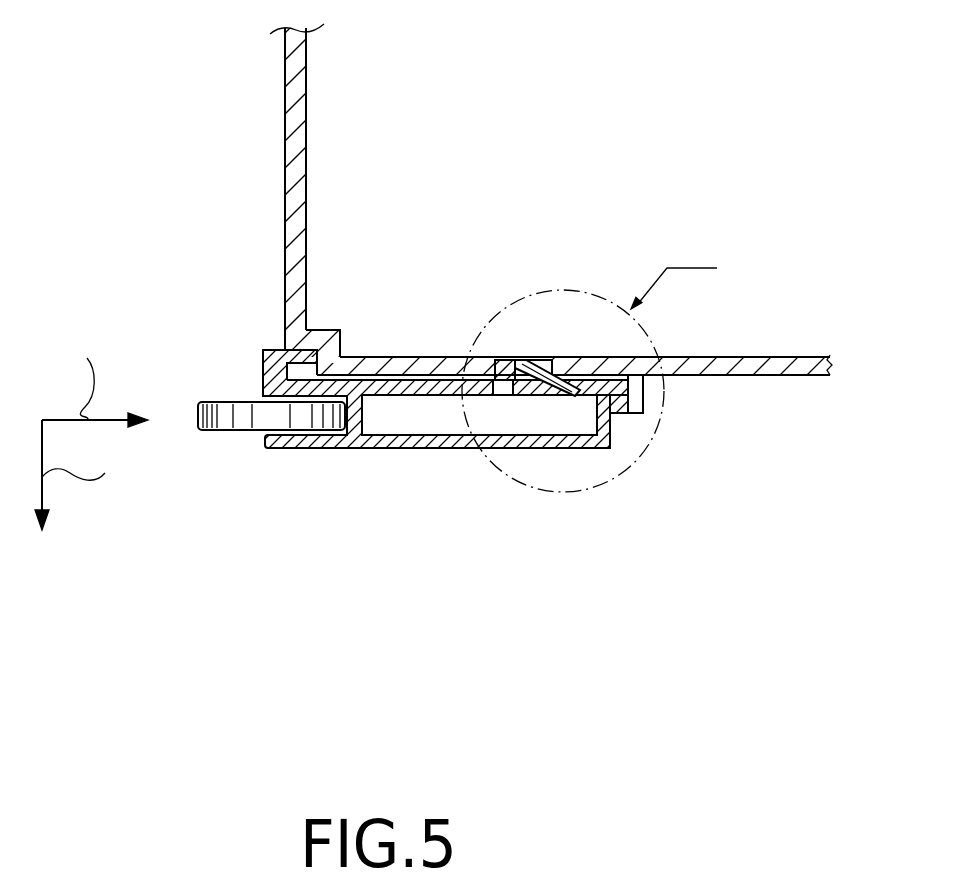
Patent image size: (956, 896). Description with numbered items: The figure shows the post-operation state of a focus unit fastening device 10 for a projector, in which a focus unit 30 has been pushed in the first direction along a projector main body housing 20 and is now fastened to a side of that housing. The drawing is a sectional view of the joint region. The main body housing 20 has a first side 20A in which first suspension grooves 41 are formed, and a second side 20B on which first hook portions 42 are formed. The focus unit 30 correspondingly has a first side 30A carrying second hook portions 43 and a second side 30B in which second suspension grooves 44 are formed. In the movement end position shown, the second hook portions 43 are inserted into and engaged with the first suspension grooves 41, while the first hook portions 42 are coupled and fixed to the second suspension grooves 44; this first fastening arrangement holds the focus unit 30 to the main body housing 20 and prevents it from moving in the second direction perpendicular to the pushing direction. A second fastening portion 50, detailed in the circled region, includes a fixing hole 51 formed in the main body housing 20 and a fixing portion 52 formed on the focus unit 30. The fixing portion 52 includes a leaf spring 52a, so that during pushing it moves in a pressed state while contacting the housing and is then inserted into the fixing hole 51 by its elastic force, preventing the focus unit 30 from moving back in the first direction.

The focus unit fastening device 10 is at (622, 116).
The projector main body housing 20 is at (305, 116).
The first side of main body housing 20A is at (327, 332).
The second side of main body housing 20B is at (648, 333).
The focus unit 30 is at (450, 448).
The first side of focus unit 30A is at (265, 387).
The second side of focus unit 30B is at (603, 449).
The first suspension groove 41 is at (343, 338).
The first hook portion 42 is at (657, 392).
The second hook portion 43 is at (266, 357).
The second suspension groove 44 is at (627, 416).
The second fastening portion 50 is at (603, 222).
The fixing hole 51 is at (552, 357).
The fixing portion 52 is at (505, 357).
The leaf spring 52a is at (545, 397).